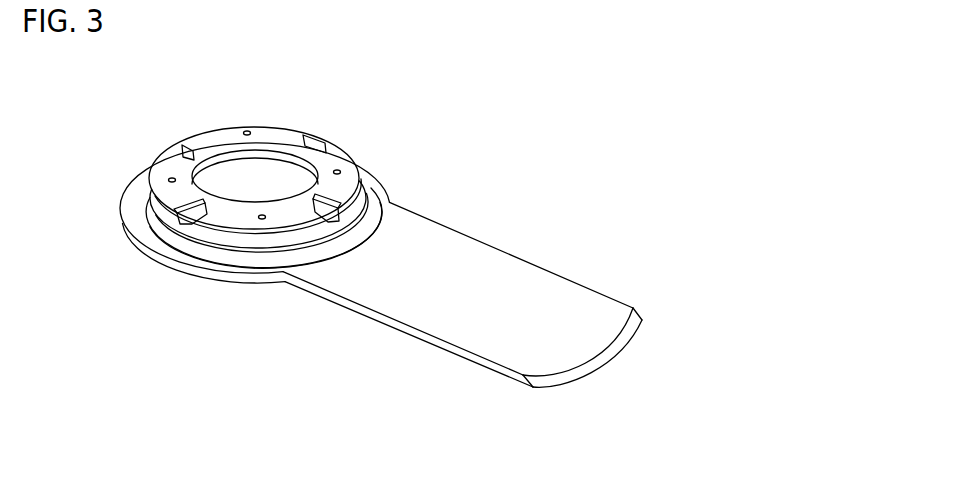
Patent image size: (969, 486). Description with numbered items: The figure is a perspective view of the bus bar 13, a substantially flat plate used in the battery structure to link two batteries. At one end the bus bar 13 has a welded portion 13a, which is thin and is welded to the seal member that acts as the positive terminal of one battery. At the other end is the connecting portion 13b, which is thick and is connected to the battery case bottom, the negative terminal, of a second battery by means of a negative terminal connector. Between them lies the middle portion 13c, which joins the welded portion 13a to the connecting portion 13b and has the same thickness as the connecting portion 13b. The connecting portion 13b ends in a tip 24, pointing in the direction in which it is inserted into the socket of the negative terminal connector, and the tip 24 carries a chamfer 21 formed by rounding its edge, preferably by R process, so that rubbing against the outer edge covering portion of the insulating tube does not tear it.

The bus bar 13 is at (393, 258).
The welded portion 13a is at (273, 138).
The connecting portion 13b is at (513, 327).
The middle portion 13c is at (380, 260).
The chamfer 21 is at (612, 352).
The tip 24 is at (550, 390).